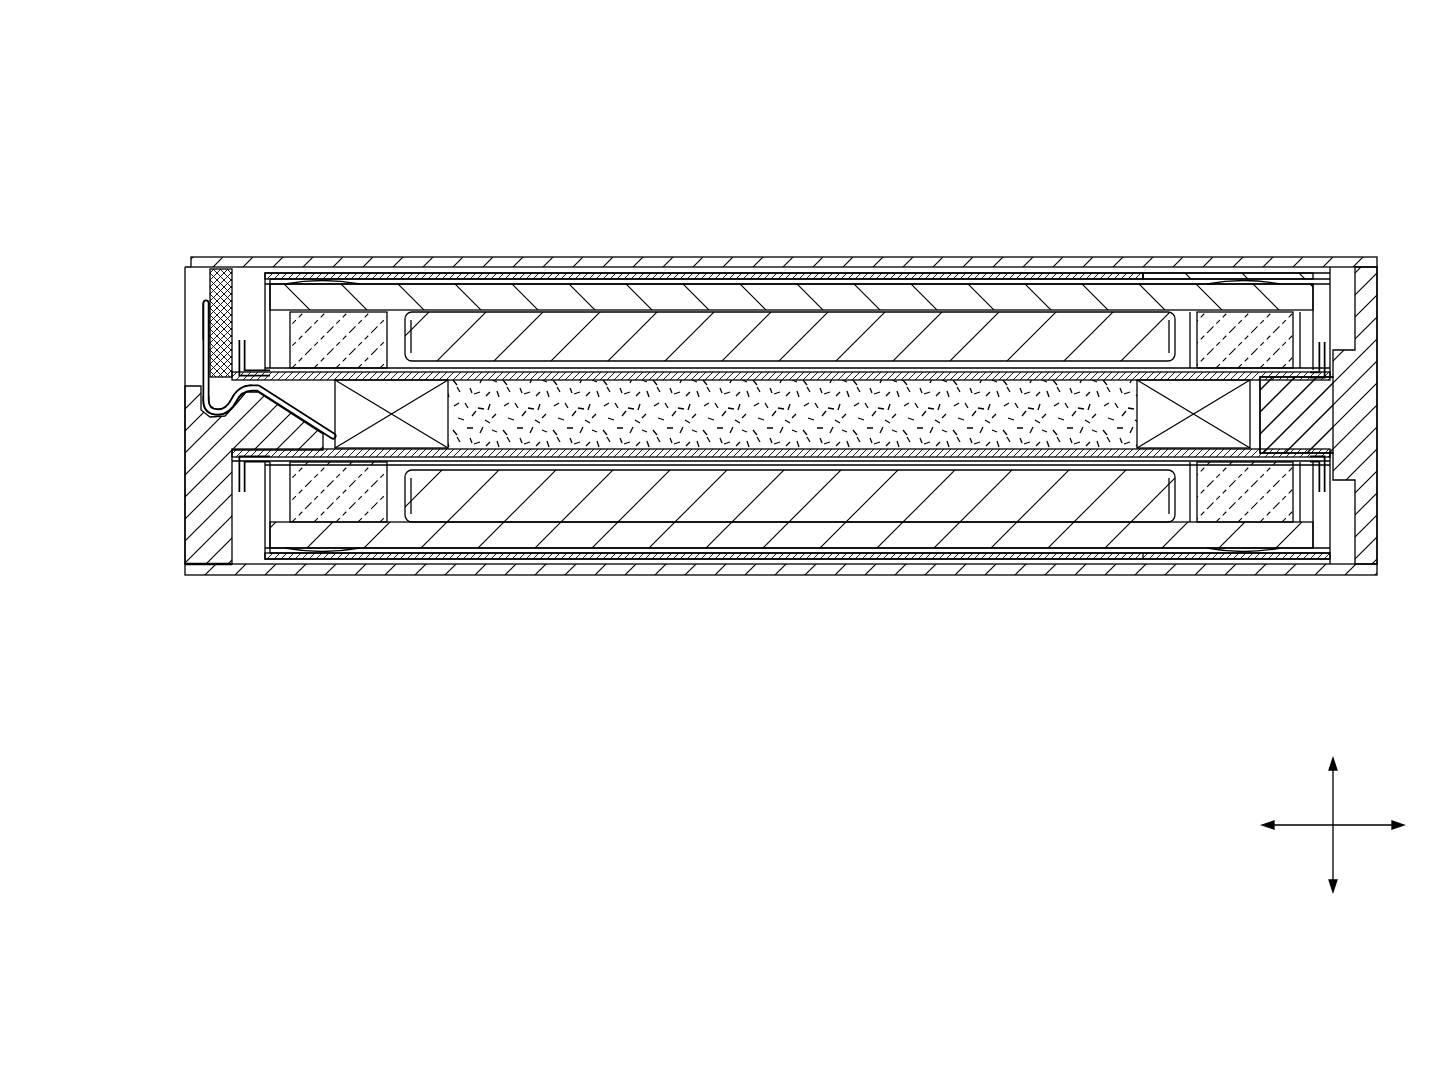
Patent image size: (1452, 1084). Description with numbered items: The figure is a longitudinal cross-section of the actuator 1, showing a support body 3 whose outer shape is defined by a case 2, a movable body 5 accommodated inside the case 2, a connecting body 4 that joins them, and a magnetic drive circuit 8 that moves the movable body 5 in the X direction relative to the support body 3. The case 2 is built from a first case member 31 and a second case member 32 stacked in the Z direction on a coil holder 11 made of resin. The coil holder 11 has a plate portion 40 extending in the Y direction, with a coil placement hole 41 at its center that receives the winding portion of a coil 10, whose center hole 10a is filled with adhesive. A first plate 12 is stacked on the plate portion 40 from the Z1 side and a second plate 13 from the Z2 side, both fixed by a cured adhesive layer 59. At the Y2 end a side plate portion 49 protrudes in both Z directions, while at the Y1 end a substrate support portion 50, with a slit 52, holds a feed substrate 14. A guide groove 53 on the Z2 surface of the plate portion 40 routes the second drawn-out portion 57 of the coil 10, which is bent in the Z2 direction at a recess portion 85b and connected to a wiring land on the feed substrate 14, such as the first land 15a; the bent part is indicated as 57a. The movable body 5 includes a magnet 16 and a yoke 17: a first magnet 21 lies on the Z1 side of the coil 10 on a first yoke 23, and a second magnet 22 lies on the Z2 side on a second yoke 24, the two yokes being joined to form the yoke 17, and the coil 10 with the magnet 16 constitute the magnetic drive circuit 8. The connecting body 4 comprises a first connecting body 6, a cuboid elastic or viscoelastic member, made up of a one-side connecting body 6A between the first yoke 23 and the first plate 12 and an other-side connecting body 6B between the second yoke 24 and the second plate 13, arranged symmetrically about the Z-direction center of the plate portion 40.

The actuator 1 is at (212, 130).
The case 2 is at (605, 166).
The support body 3 is at (305, 123).
The connecting body 4 is at (802, 445).
The movable body 5 is at (805, 667).
The first connecting body 6 is at (802, 445).
The one-side connecting body 6A is at (343, 505).
The other-side connecting body 6B is at (369, 330).
The magnetic drive circuit 8 is at (428, 434).
The coil 10 is at (1136, 378).
The center hole 10a is at (1122, 425).
The coil holder 11 is at (1282, 392).
The first plate 12 is at (688, 465).
The second plate 13 is at (758, 372).
The feed substrate 14 is at (233, 297).
The first land 15a is at (203, 318).
The magnet 16 is at (835, 624).
The yoke 17 is at (557, 624).
The first magnet 21 is at (720, 500).
The second magnet 22 is at (800, 340).
The first yoke 23 is at (595, 535).
The second yoke 24 is at (648, 293).
The first case member 31 is at (518, 575).
The second case member 32 is at (503, 272).
The plate portion 40 is at (1300, 428).
The coil placement hole 41 is at (1250, 417).
The side plate portion 49 is at (1375, 286).
The substrate support portion 50 is at (165, 360).
The slit 52 is at (227, 268).
The guide groove 53 is at (311, 406).
The second drawn-out portion 57 is at (203, 369).
The bent portion of lead tab 57a is at (203, 408).
The adhesive layer 59 is at (866, 432).
The recess portion 85b is at (236, 416).